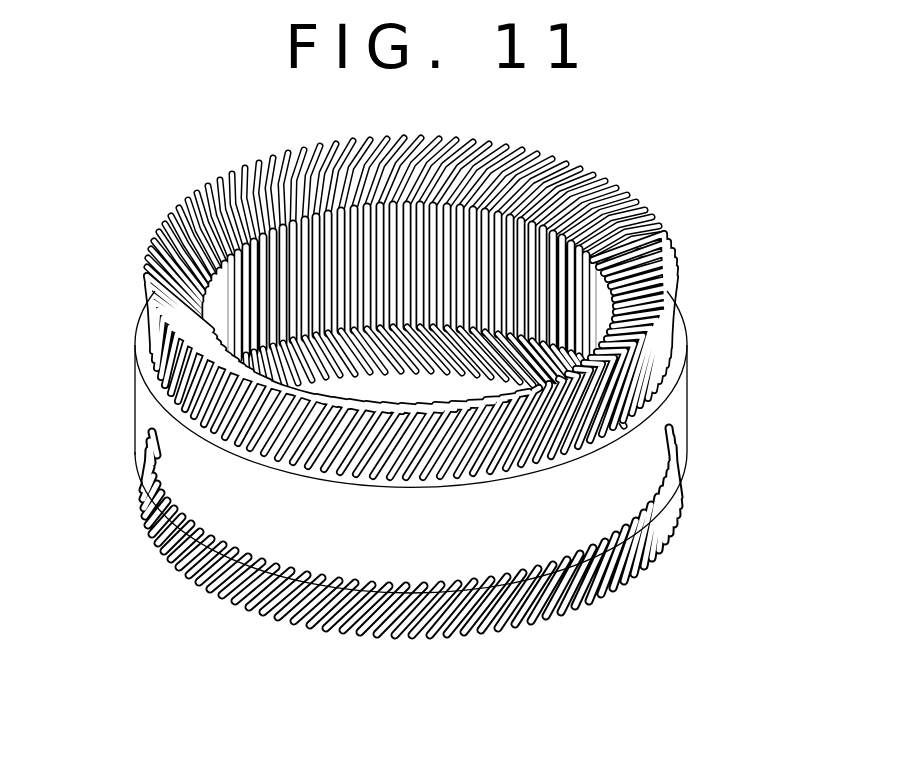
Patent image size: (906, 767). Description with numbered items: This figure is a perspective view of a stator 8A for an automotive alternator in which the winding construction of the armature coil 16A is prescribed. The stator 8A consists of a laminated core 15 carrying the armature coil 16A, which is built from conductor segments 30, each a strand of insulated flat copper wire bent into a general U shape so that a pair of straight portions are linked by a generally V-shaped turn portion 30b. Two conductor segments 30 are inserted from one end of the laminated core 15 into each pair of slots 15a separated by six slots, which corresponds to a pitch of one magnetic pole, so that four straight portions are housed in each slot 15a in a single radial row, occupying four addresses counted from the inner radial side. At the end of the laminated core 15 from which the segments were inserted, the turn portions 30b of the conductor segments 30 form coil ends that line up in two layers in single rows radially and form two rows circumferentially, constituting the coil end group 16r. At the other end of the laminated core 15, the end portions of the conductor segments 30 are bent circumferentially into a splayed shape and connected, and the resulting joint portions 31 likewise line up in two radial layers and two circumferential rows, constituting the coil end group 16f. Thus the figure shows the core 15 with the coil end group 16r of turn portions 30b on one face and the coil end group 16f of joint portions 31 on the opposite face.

The stator 8A is at (414, 386).
The coil end group 16r is at (398, 307).
The turn portion 30b is at (627, 220).
The conductor segment 30 is at (661, 240).
The armature coil 16A is at (414, 307).
The slot 15a is at (645, 411).
The laminated core 15 is at (416, 463).
The joint portion 31 is at (582, 592).
The coil end group 16f is at (375, 531).